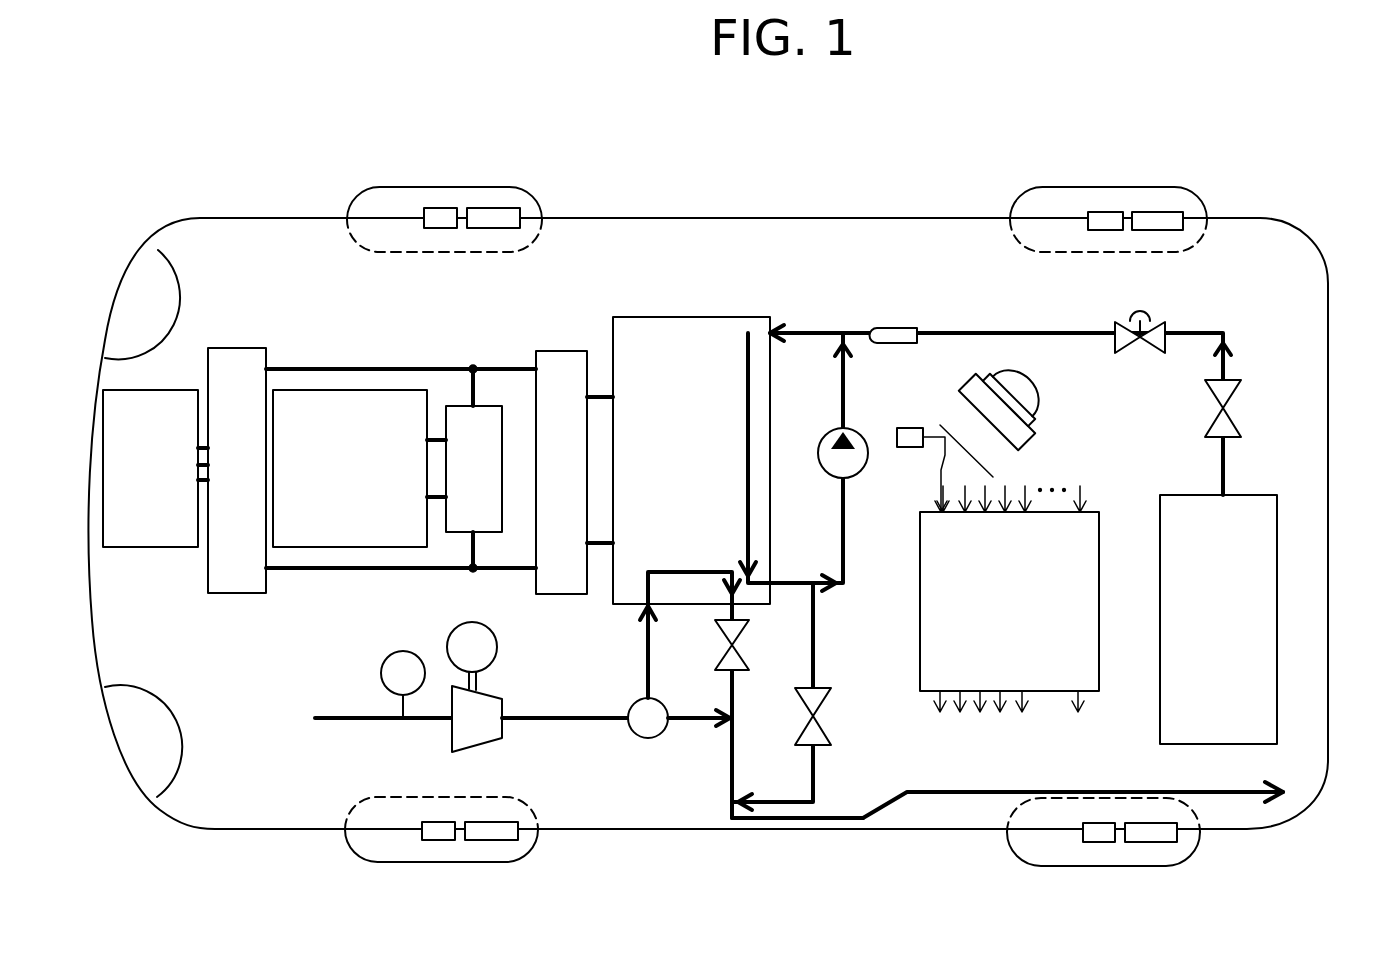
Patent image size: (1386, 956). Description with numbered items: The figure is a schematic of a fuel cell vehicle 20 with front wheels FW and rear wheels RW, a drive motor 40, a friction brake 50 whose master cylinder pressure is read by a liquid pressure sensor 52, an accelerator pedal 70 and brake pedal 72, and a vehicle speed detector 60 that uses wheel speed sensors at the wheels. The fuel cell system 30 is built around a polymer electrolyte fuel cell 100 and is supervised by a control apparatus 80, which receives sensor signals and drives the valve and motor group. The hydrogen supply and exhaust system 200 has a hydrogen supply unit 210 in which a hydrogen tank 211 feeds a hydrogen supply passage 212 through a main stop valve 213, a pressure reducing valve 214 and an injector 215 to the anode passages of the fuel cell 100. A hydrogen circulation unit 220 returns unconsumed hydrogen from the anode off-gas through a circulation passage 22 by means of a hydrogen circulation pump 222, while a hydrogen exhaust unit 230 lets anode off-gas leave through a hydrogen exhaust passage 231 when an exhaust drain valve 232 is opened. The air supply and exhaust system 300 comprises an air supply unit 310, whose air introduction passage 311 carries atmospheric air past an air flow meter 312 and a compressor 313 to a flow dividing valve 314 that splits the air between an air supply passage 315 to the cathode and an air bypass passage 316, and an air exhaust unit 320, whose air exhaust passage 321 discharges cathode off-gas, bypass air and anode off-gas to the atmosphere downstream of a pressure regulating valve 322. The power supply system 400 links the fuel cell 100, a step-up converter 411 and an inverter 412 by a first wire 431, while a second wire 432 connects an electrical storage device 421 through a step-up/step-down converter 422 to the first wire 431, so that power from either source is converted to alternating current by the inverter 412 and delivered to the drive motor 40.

The fuel cell vehicle 20 is at (708, 458).
The fuel cell system 30 is at (896, 197).
The drive motor 40 is at (170, 390).
The friction brake 50 is at (484, 208).
The vehicle speed detector 60 is at (438, 208).
The liquid pressure sensor 52 is at (906, 447).
The accelerator pedal 70 is at (999, 407).
The brake pedal 72 is at (1035, 390).
The control apparatus 80 is at (1100, 512).
The fuel cell 100 is at (770, 317).
The hydrogen supply and exhaust system 200 is at (1062, 511).
The hydrogen supply unit 210 is at (1036, 490).
The hydrogen tank 211 is at (1240, 495).
The hydrogen supply passage 212 is at (1000, 308).
The main stop valve 213 is at (1210, 418).
The pressure reducing valve 214 is at (1165, 326).
The injector 215 is at (905, 328).
The hydrogen circulation unit 220 is at (873, 453).
The hydrogen circulation pump 222 is at (855, 477).
The hydrogen circulation pipe 22 is at (845, 558).
The hydrogen exhaust unit 230 is at (824, 696).
The hydrogen exhaust passage 231 is at (818, 683).
The exhaust drain valve 232 is at (830, 722).
The air supply and exhaust system 300 is at (720, 735).
The air supply unit 310 is at (515, 714).
The air introduction passage 311 is at (350, 718).
The air flow meter 312 is at (378, 720).
The compressor 313 is at (452, 742).
The flow dividing valve 314 is at (645, 738).
The air supply passage 315 is at (646, 675).
The air bypass passage 316 is at (693, 751).
The air exhaust unit 320 is at (1007, 840).
The air exhaust passage 321 is at (920, 795).
The pressure regulating valve 322 is at (742, 652).
The power supply system 400 is at (388, 429).
The step-up converter 411 is at (560, 351).
The inverter 412 is at (255, 348).
The electrical storage device 421 is at (370, 390).
The step-up/step-down converter 422 is at (455, 406).
The first wire 431 is at (355, 568).
The second wire 432 is at (478, 548).
The front wheels FW is at (510, 187).
The rear wheels RW is at (1172, 187).